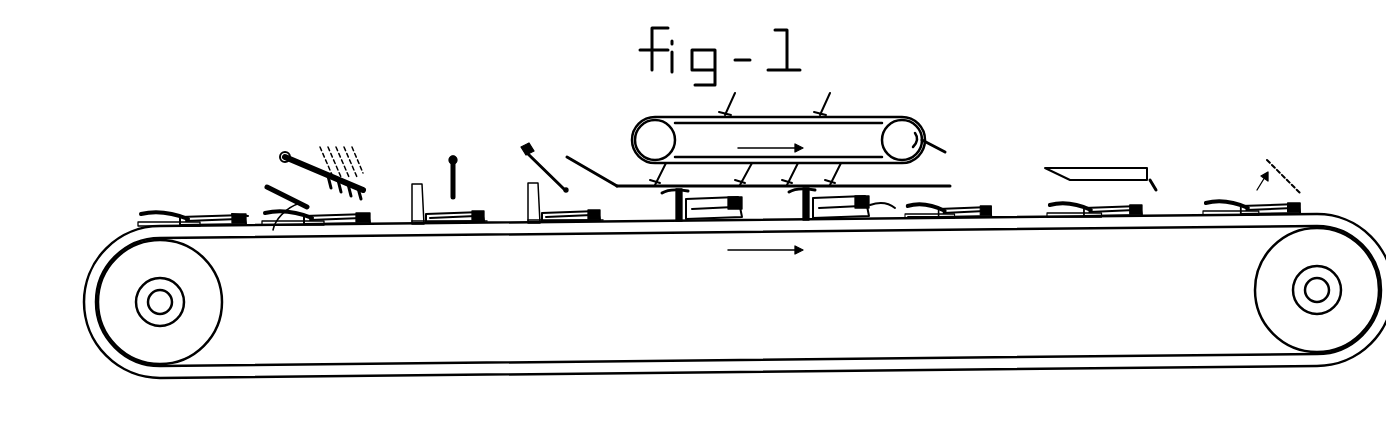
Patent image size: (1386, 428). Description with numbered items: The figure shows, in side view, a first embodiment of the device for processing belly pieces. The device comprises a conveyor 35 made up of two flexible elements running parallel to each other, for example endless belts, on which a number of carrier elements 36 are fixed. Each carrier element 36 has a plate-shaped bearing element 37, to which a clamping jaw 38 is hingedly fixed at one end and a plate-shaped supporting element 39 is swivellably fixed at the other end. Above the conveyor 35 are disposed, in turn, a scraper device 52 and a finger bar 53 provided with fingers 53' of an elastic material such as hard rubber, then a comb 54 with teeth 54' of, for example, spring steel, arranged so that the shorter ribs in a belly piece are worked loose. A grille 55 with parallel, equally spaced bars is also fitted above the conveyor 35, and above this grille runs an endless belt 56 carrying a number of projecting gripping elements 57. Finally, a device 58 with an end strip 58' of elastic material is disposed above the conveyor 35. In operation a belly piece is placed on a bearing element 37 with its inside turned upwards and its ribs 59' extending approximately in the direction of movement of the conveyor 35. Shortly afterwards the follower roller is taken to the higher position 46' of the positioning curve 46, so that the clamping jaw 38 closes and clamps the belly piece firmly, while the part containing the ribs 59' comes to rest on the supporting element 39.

The conveyor 35 is at (1316, 206).
The carrier element 36 is at (144, 202).
The plate-shaped bearing element 37 is at (460, 223).
The clamping jaw 38 is at (236, 195).
The plate-shaped supporting element 39 is at (388, 218).
The positioning curve 46 is at (229, 307).
The higher position of the positioning curve 46' is at (245, 288).
The scraper device 52 is at (298, 150).
The finger bar 53 is at (472, 156).
The fingers 53' is at (486, 180).
The comb 54 is at (544, 145).
The teeth 54' is at (585, 157).
The grille 55 is at (955, 178).
The endless belt 56 is at (880, 117).
The projecting gripping element 57 is at (732, 97).
The device with end strip 58 is at (1096, 150).
The end strip 58' is at (1172, 165).
The ribs 59' is at (890, 232).